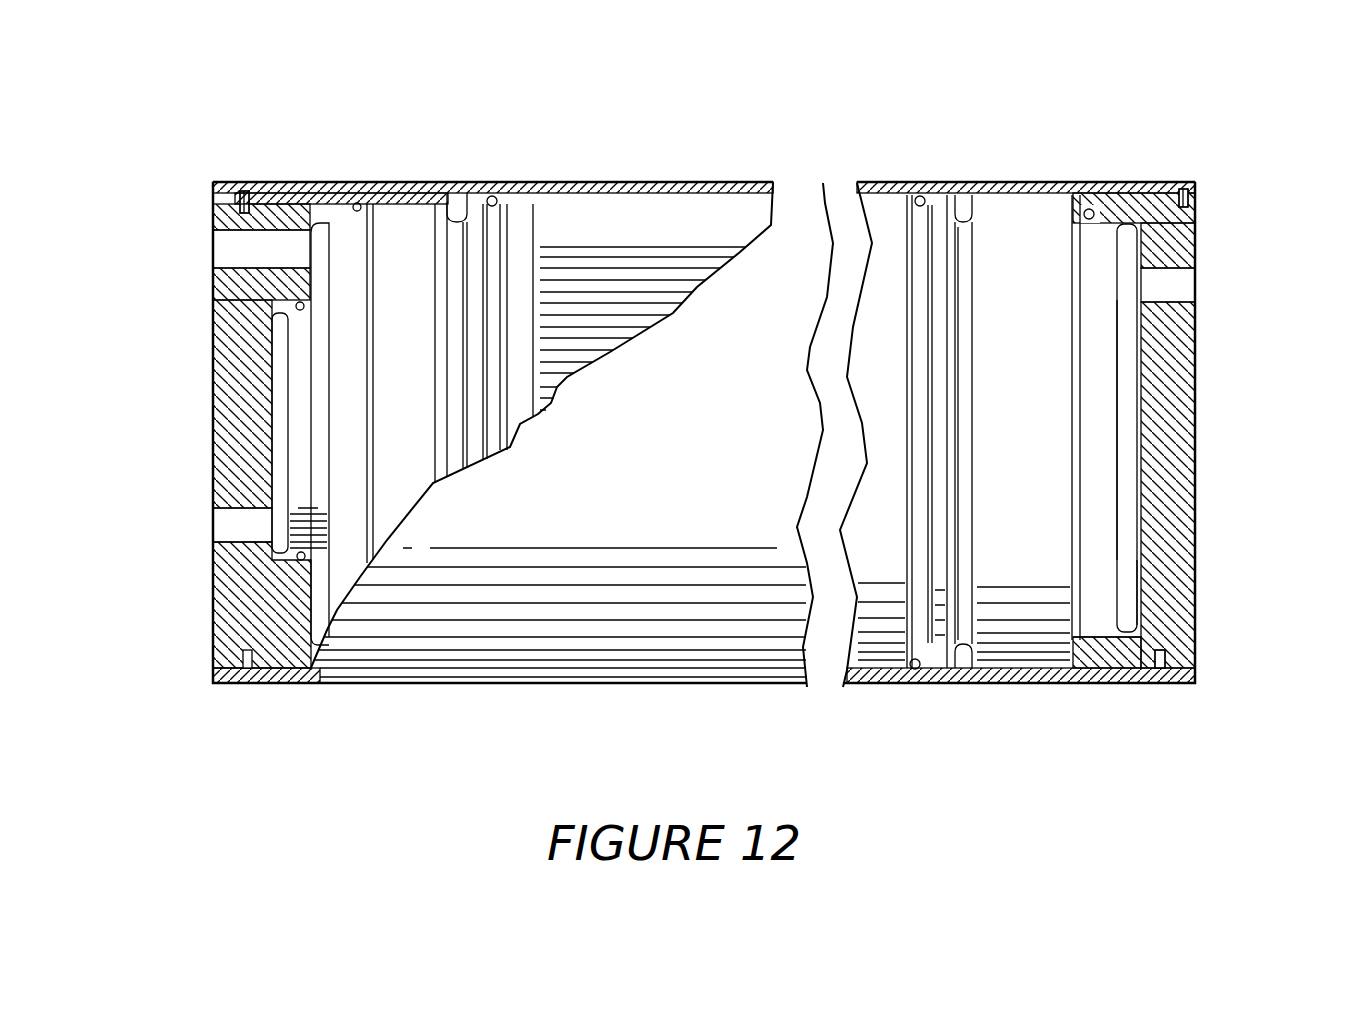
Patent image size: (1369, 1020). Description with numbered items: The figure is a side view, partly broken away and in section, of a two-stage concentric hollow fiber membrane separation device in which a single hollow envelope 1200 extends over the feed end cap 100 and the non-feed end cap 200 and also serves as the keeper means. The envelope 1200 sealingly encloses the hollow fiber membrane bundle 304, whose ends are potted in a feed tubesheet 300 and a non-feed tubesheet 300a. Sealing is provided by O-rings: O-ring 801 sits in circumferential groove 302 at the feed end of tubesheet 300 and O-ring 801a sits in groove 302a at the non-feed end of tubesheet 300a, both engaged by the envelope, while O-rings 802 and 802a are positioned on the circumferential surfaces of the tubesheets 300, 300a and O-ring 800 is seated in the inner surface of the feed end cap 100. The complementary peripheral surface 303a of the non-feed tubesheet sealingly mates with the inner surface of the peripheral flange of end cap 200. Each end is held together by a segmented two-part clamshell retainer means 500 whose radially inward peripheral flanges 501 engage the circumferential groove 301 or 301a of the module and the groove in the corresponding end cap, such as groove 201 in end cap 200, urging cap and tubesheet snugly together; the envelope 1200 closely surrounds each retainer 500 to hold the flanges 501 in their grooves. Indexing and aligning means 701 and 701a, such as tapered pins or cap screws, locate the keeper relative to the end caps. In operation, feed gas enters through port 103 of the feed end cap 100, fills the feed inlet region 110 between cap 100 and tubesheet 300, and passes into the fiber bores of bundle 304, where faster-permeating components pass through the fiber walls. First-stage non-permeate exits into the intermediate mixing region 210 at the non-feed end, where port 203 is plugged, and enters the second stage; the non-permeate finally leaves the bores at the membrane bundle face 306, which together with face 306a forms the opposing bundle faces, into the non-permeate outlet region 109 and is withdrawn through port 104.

The feed end cap 100 is at (233, 425).
The fluid communication port 103 is at (235, 247).
The fluid communication port 104 is at (245, 523).
The non-permeate outlet region 109 is at (282, 473).
The feed inlet region 110 is at (318, 297).
The non-feed end cap 200 is at (1159, 456).
The circumferential groove 201 is at (1175, 668).
The fluid communication port 203 is at (1170, 284).
The intermediate mixing region 210 is at (1127, 545).
The feed tubesheet 300 is at (412, 218).
The non-feed tubesheet 300a is at (1027, 237).
The circumferential groove 301 is at (450, 243).
The circumferential groove 301a is at (853, 687).
The circumferential groove 302 is at (495, 285).
The circumferential groove 302a is at (918, 285).
The complementary peripheral surface 303a is at (1105, 349).
The hollow fiber membrane bundle 304 is at (620, 277).
The membrane bundle face 306 is at (288, 383).
The membrane bundle face 306a is at (1122, 392).
The clamshell retainer means 500 is at (290, 197).
The peripheral flanges 501 is at (447, 197).
The indexing and aligning means 701 is at (224, 183).
The indexing and aligning means 701a is at (1197, 190).
The O-ring 800 is at (297, 310).
The O-ring 801 is at (498, 198).
The O-ring 801a is at (920, 196).
The O-ring 802 is at (357, 202).
The O-ring 802a is at (1093, 210).
The single hollow envelope 1200 is at (723, 180).